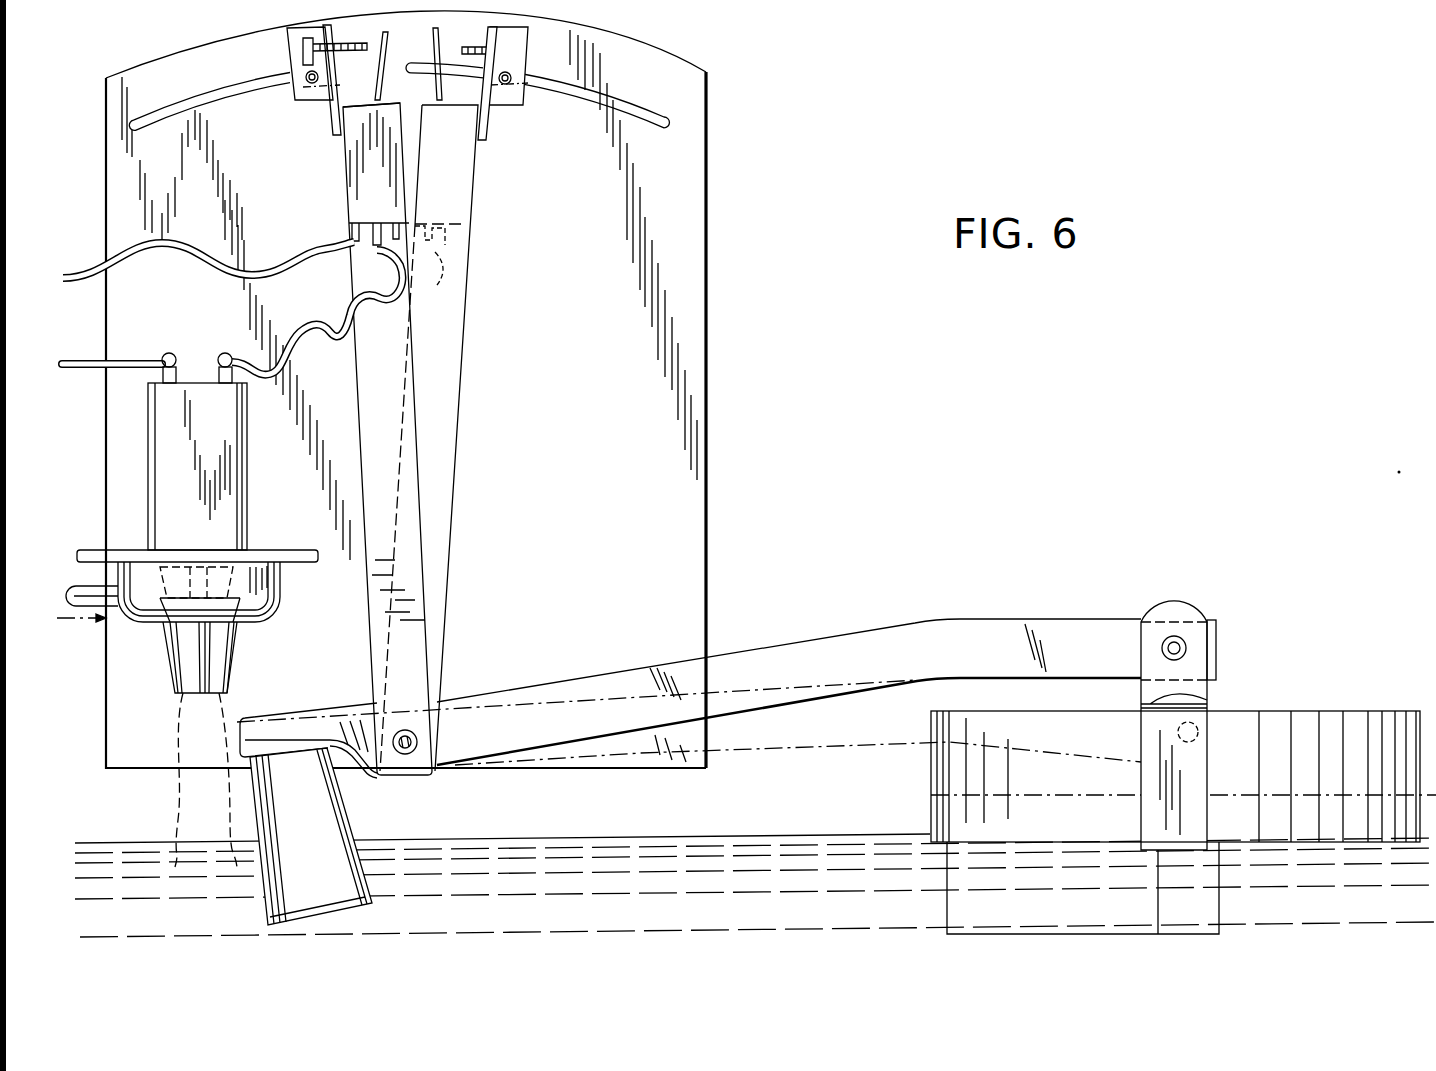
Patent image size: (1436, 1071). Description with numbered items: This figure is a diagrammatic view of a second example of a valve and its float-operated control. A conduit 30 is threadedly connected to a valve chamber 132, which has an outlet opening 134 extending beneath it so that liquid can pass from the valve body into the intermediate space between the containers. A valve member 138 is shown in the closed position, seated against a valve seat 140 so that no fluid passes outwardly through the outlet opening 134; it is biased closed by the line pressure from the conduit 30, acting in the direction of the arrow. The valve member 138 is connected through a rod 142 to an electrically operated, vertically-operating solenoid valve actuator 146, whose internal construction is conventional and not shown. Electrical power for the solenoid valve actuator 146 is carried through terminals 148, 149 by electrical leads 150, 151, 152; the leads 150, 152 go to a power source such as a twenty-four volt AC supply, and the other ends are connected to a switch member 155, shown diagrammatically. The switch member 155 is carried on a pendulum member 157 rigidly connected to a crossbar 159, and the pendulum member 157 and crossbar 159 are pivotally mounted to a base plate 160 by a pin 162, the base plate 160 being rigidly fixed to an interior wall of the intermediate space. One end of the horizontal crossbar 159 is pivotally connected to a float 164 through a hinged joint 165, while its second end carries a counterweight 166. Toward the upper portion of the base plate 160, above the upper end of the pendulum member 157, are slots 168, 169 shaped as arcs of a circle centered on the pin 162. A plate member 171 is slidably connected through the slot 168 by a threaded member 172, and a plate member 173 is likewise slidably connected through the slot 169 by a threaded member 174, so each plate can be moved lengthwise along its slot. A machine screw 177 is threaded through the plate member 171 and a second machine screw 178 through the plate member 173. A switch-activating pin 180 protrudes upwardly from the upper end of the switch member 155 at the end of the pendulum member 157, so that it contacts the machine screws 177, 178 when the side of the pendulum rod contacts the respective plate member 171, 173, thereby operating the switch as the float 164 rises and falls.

The conduit 30 is at (82, 585).
The valve chamber 132 is at (282, 592).
The outlet opening 134 is at (233, 678).
The valve member 138 is at (242, 607).
The valve seat 140 is at (163, 623).
The rod 142 is at (187, 575).
The solenoid valve actuator 146 is at (247, 500).
The terminal 148 is at (180, 340).
The terminal 149 is at (226, 354).
The electrical lead 150 is at (122, 360).
The electrical lead 151 is at (327, 318).
The electrical lead 152 is at (222, 247).
The switch member 155 is at (345, 186).
The pendulum member 157 is at (432, 556).
The crossbar 159 is at (574, 680).
The base plate 160 is at (696, 310).
The pin 162 is at (410, 757).
The float 164 is at (1362, 690).
The hinged joint 165 is at (1187, 600).
The counterweight 166 is at (250, 800).
The slot 168 is at (661, 115).
The slot 169 is at (197, 95).
The plate member 171 is at (482, 135).
The threaded member 172 is at (524, 108).
The plate member 173 is at (333, 127).
The threaded member 174 is at (305, 75).
The machine screw 177 is at (466, 52).
The machine screw 178 is at (370, 45).
The switch-activating pin 180 is at (387, 58).